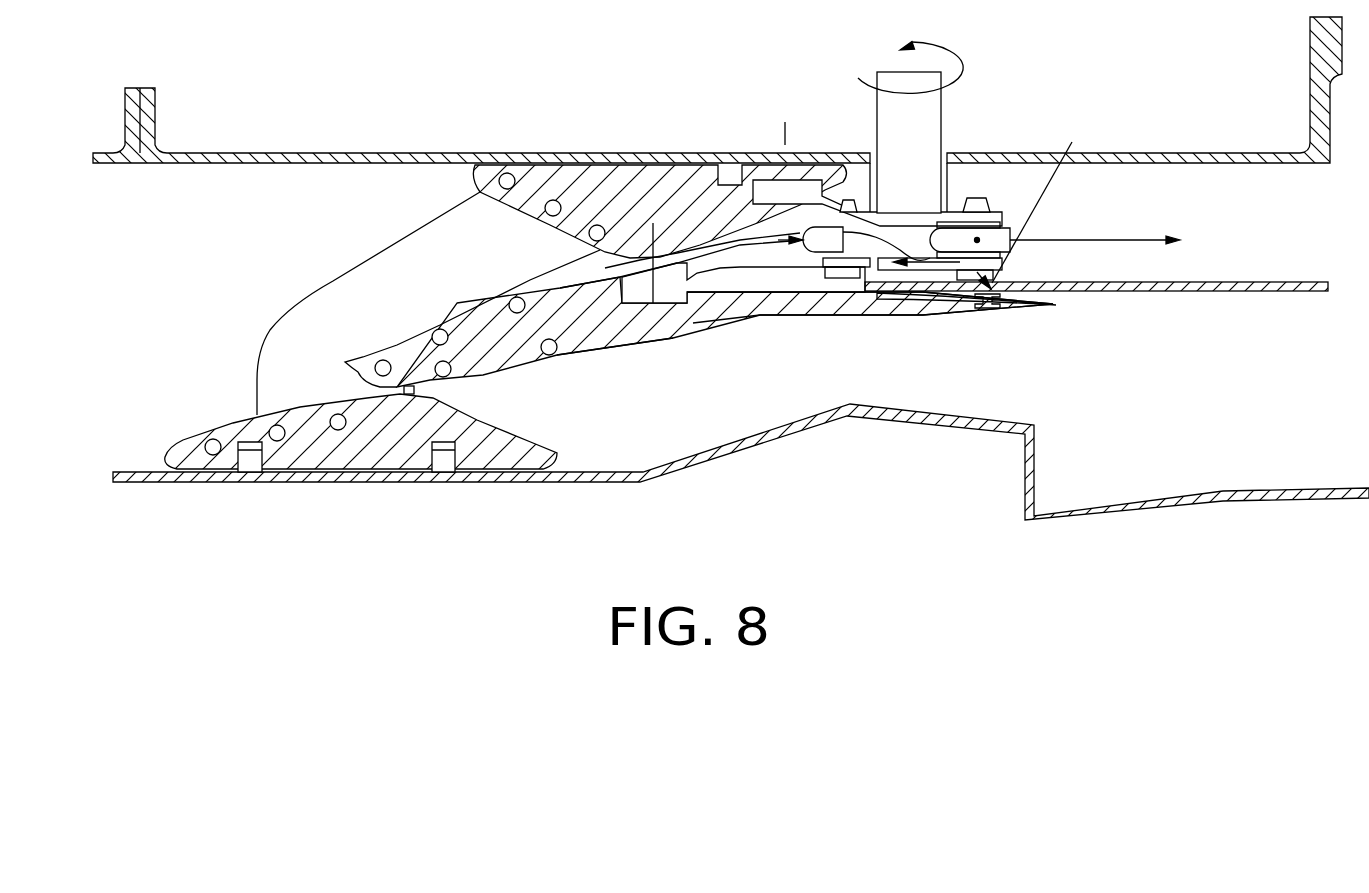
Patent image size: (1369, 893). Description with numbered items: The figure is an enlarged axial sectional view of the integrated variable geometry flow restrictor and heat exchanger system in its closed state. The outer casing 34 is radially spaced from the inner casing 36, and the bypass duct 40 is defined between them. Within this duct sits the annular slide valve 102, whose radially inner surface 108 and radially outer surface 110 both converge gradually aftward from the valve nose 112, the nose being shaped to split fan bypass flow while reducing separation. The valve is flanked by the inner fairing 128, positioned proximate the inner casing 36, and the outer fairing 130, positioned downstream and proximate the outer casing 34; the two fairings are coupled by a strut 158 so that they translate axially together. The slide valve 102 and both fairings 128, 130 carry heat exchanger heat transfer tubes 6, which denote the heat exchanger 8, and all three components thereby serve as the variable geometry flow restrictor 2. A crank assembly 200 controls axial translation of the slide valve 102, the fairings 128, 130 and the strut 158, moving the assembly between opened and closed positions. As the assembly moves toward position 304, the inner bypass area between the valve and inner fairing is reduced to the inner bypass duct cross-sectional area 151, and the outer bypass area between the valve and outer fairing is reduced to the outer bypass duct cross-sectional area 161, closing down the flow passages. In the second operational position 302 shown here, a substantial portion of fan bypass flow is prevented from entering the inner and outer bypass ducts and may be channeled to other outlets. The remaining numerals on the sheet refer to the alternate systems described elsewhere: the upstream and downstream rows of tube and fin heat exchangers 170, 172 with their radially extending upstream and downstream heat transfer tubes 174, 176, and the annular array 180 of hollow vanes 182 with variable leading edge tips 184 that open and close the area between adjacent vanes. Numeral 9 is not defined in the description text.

The variable geometry flow restrictor 2 is at (560, 400).
The heat exchanger heat transfer tubes 6 is at (597, 225).
The heat exchanger 8 is at (419, 316).
The hole 9 is at (377, 360).
The outer casing 34 is at (277, 153).
The inner casing 36 is at (197, 482).
The bypass duct 40 is at (172, 300).
The annular slide valve 102 is at (555, 335).
The radially inner surface 108 is at (570, 356).
The radially outer surface 110 is at (528, 299).
The valve nose 112 is at (343, 380).
The inner fairing 128 is at (385, 454).
The outer fairing 130 is at (668, 201).
The inner bypass duct cross-sectional area 151 is at (414, 396).
The strut 158 is at (340, 252).
The outer bypass duct cross-sectional area 161 is at (637, 265).
The upstream row of tube and fin heat exchangers 170 is at (950, 267).
The downstream row of tube and fin heat exchangers 172 is at (990, 197).
The upstream heat transfer tubes 174 is at (1000, 290).
The downstream heat transfer tubes 176 is at (985, 203).
The annular array 180 is at (803, 268).
The hollow vanes 182 is at (718, 290).
The variable leading edge tips 184 is at (793, 237).
The crank assembly 200 is at (893, 70).
The second operational position 302 is at (1122, 68).
The position 304 is at (962, 126).